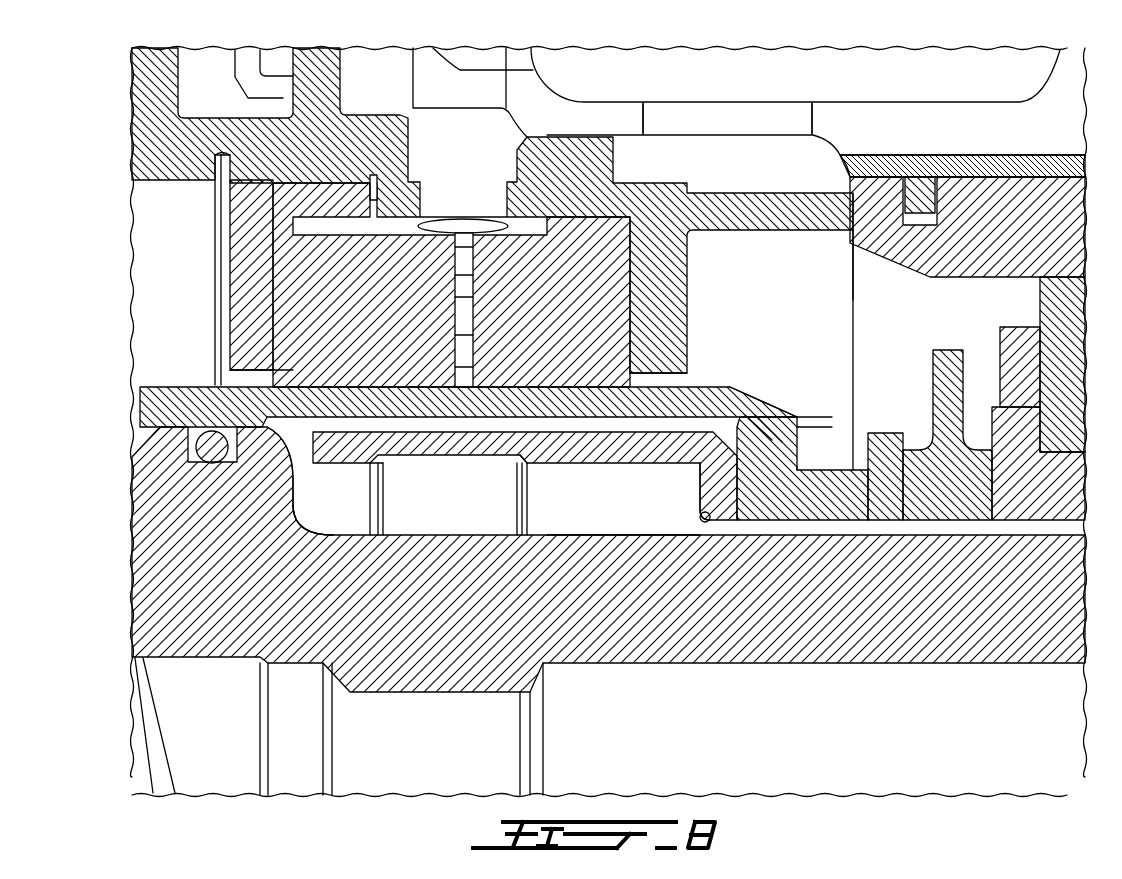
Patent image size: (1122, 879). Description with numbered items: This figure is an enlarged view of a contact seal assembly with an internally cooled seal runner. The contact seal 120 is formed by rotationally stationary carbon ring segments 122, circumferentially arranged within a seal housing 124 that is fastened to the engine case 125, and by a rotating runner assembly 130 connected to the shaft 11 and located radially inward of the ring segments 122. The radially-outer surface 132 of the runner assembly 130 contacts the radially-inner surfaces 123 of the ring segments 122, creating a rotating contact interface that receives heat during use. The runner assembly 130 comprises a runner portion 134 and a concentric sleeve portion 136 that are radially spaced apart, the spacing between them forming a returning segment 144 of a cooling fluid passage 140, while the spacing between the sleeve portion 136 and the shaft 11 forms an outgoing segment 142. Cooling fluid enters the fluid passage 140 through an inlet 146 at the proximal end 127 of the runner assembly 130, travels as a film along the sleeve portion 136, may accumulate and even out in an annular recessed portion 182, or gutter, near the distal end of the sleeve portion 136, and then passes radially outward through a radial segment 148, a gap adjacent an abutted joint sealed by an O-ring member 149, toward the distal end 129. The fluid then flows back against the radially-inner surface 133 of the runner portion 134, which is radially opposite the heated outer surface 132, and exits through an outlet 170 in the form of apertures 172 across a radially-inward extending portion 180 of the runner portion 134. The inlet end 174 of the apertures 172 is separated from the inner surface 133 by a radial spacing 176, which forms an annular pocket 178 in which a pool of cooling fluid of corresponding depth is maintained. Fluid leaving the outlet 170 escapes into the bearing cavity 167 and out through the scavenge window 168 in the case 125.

The shaft 11 is at (790, 590).
The contact seal 120 is at (455, 108).
The ring segments 122 is at (365, 283).
The radially-inner surfaces 123 is at (340, 470).
The seal housing 124 is at (242, 263).
The case 125 is at (878, 138).
The proximal end 127 is at (780, 410).
The distal end 129 is at (227, 377).
The runner assembly 130 is at (708, 358).
The radially-outer surface 132 is at (293, 383).
The radially-inner surface 133 is at (440, 430).
The runner portion 134 is at (252, 345).
The sleeve portion 136 is at (652, 452).
The fluid passage 140 is at (592, 506).
The outgoing segment 142 is at (583, 522).
The returning segment 144 is at (563, 428).
The inlet 146 is at (705, 520).
The radial segment 148 is at (292, 452).
The O-ring member 149 is at (237, 433).
The bearing cavity 167 is at (755, 274).
The scavenge window 168 is at (688, 128).
The outlet 170 is at (768, 400).
The outlet apertures 172 is at (757, 386).
The inlet end 174 is at (760, 452).
The radial spacing 176 is at (820, 416).
The annular pocket 178 is at (488, 430).
The radially-inward extending portion 180 is at (820, 428).
The annular recessed portion 182 is at (398, 463).